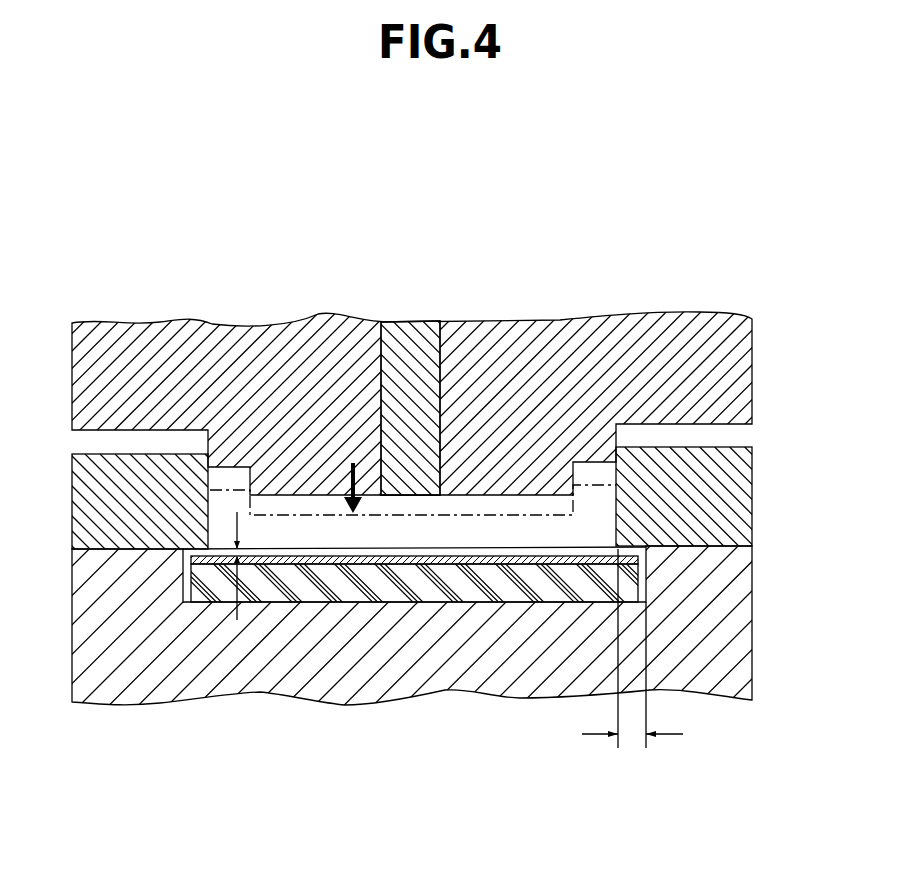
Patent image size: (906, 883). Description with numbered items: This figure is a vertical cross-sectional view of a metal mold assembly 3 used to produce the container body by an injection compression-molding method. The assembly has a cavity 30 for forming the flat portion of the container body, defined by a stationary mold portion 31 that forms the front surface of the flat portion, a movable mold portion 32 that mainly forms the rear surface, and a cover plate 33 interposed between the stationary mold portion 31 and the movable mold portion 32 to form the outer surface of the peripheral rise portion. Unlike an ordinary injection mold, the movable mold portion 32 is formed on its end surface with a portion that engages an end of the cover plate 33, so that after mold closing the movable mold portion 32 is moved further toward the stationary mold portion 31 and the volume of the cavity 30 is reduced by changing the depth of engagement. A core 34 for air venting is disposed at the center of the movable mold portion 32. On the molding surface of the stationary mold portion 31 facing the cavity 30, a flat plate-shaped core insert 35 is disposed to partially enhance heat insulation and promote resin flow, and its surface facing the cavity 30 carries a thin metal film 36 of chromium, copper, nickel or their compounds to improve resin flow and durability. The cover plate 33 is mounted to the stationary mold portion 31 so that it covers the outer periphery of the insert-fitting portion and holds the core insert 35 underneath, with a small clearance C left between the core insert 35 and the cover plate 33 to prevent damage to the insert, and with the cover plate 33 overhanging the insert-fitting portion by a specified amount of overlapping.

The metal mold assembly 3 is at (453, 507).
The cavity 30 is at (537, 527).
The stationary mold portion 31 is at (738, 606).
The movable mold portion 32 is at (735, 375).
The cover plate 33 is at (733, 517).
The core 34 is at (413, 335).
The core insert 35 is at (430, 592).
The metal film 36 is at (470, 556).
The clearance C is at (242, 556).